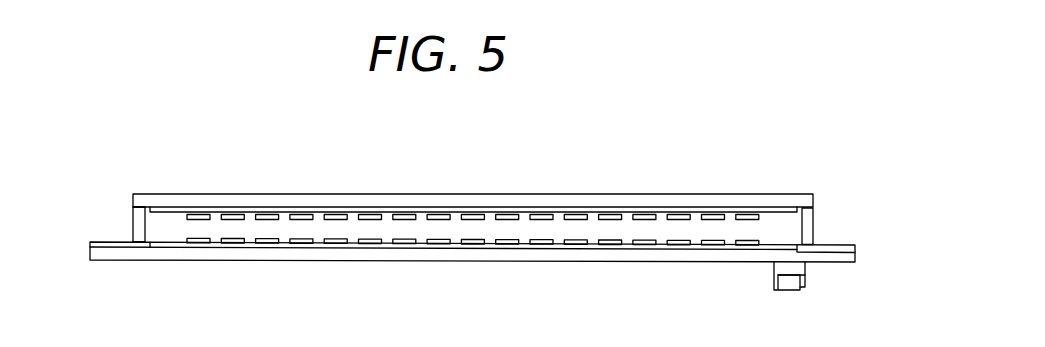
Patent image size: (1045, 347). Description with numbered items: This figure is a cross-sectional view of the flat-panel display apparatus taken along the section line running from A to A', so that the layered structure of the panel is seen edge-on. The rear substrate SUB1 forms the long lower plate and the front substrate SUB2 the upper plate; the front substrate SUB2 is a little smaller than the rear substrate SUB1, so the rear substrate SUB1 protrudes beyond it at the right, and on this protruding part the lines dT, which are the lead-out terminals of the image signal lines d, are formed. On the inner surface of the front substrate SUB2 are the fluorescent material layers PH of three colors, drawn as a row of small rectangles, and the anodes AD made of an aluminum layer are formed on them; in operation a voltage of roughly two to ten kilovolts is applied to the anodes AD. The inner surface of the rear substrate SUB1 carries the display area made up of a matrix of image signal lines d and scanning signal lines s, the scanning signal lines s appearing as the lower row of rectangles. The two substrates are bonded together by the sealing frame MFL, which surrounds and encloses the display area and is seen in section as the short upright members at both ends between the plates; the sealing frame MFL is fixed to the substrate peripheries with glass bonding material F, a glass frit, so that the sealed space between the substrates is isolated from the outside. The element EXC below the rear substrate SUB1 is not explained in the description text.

The front substrate SUB2 is at (473, 203).
The rear substrate SUB1 is at (383, 261).
The anode AD is at (222, 212).
The sealing frame MFL is at (136, 228).
The glass bonding material F is at (137, 203).
The fluorescent material layer PH is at (298, 218).
The scanning signal line s is at (712, 238).
The image signal line d is at (557, 248).
The lead-out terminal of image signal line dT is at (845, 245).
The external connector EXC is at (783, 290).
The section line end A is at (89, 281).
The section line end A' is at (848, 283).